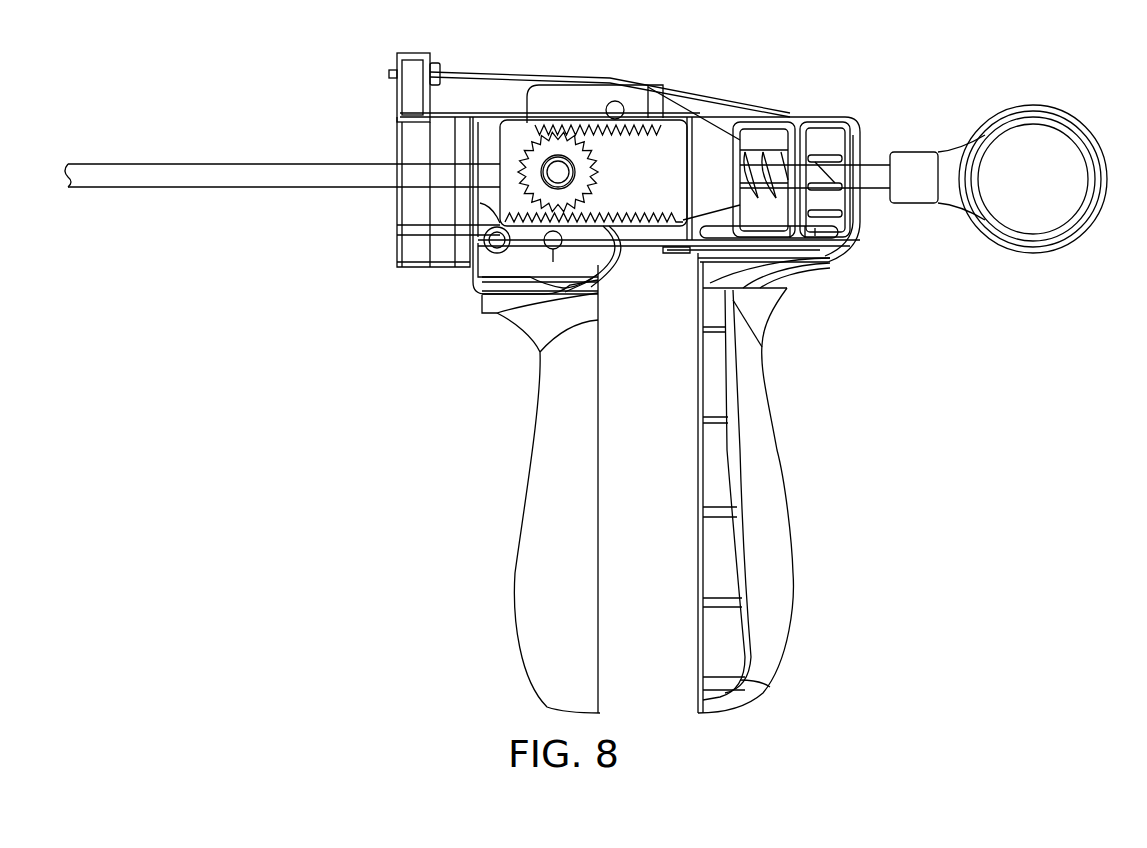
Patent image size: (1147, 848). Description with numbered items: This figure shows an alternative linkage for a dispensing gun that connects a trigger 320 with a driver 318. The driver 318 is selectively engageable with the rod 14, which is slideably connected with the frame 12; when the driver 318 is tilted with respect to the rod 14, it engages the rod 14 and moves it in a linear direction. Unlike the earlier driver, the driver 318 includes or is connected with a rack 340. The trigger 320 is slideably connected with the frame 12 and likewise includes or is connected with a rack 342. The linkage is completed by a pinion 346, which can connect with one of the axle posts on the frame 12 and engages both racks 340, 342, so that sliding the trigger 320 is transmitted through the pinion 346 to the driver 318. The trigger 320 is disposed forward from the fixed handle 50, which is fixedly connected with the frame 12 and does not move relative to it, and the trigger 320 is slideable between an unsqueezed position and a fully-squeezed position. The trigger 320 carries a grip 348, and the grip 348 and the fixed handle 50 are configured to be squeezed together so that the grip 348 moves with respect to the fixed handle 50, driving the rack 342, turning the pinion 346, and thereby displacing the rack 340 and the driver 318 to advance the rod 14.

The frame 12 is at (788, 88).
The rod 14 is at (226, 188).
The driver 318 is at (609, 98).
The trigger 320 is at (427, 492).
The rack 340 is at (505, 130).
The rack 342 is at (497, 205).
The pinion 346 is at (520, 190).
The grip 348 is at (528, 566).
The fixed handle 50 is at (730, 583).